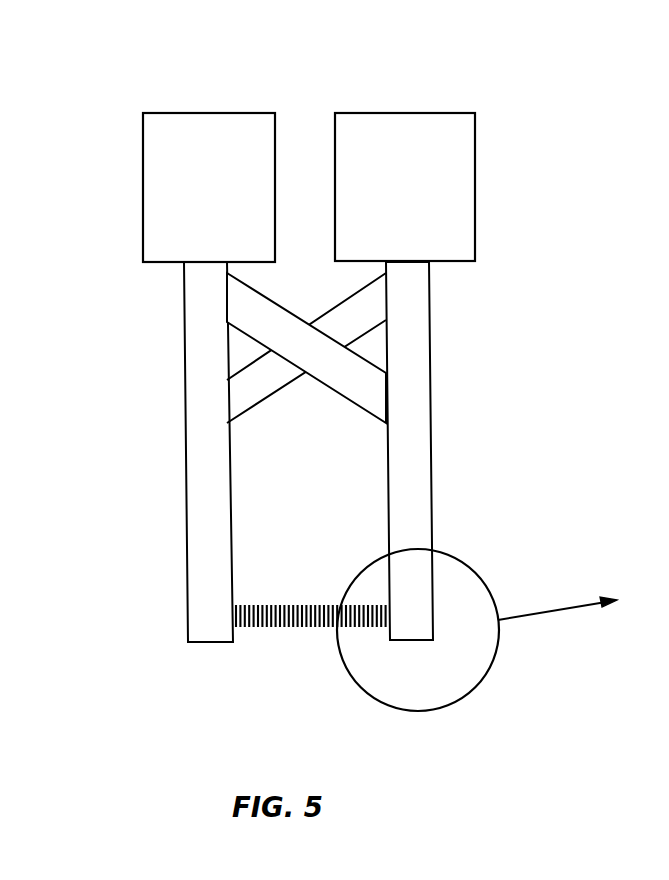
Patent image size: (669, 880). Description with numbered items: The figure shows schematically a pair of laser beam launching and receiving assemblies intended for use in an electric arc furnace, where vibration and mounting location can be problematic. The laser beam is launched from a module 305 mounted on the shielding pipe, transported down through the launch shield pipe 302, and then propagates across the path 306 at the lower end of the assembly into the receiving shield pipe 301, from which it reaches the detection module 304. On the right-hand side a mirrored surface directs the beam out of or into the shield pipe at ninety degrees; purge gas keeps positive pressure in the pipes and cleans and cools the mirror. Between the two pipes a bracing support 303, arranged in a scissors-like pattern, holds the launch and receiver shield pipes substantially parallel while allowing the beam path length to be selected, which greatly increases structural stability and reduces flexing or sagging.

The receiving shield pipe 301 is at (432, 304).
The shield pipe 302 is at (183, 308).
The bracing support 303 is at (283, 393).
The detection module 304 is at (407, 113).
The module 305 is at (200, 113).
The path 306 is at (294, 627).